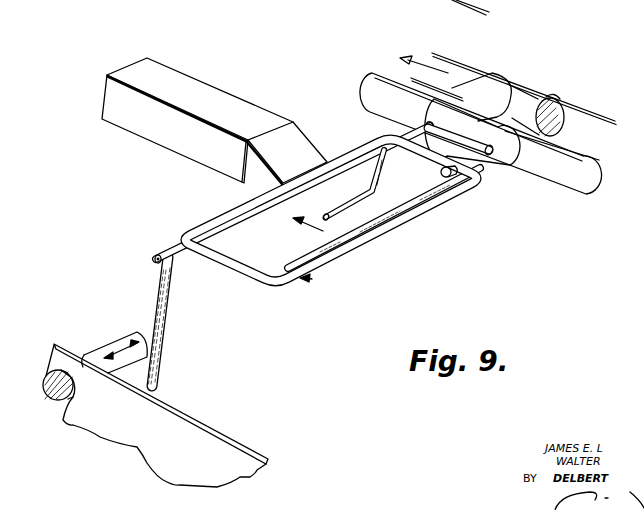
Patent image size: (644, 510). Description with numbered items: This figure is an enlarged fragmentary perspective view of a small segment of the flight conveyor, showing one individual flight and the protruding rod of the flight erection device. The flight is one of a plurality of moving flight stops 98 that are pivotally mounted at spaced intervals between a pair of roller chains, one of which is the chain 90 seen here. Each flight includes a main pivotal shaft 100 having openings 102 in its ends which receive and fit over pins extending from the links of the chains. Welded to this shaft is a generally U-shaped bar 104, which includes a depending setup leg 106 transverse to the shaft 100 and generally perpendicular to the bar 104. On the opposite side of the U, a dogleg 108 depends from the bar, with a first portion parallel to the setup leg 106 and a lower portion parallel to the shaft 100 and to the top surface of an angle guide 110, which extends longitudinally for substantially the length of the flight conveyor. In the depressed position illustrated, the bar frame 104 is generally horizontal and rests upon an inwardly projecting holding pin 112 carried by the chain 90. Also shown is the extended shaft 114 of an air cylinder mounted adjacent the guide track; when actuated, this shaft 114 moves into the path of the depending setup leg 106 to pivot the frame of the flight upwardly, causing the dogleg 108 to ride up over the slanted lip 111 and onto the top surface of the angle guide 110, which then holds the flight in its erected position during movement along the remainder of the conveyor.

The roller chain 90 is at (538, 112).
The flight stop 98 is at (312, 279).
The main pivotal shaft 100 is at (217, 226).
The openings 102 is at (149, 262).
The U-shaped bar 104 is at (439, 207).
The depending leg 106 is at (163, 313).
The dogleg 108 is at (353, 212).
The angle guide 110 is at (183, 85).
The slanted lip 111 is at (290, 138).
The holding pin 112 is at (487, 161).
The extended shaft 114 is at (71, 401).